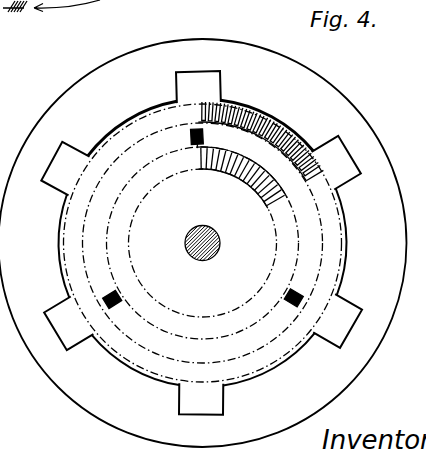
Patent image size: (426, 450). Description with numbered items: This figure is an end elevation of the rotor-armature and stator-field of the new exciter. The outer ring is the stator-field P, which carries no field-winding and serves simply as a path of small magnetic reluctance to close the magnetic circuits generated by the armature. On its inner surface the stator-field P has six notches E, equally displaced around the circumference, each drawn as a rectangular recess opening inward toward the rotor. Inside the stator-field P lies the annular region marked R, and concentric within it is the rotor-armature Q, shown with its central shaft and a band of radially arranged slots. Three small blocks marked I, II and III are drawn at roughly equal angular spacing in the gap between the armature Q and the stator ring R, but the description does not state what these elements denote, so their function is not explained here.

The stator-field P is at (203, 243).
The notches E is at (201, 243).
The stator core with winding slots R is at (203, 242).
The rotor Q is at (203, 243).
The first brush / contact block I is at (202, 139).
The second brush / contact block II is at (287, 303).
The third brush / contact block III is at (105, 293).